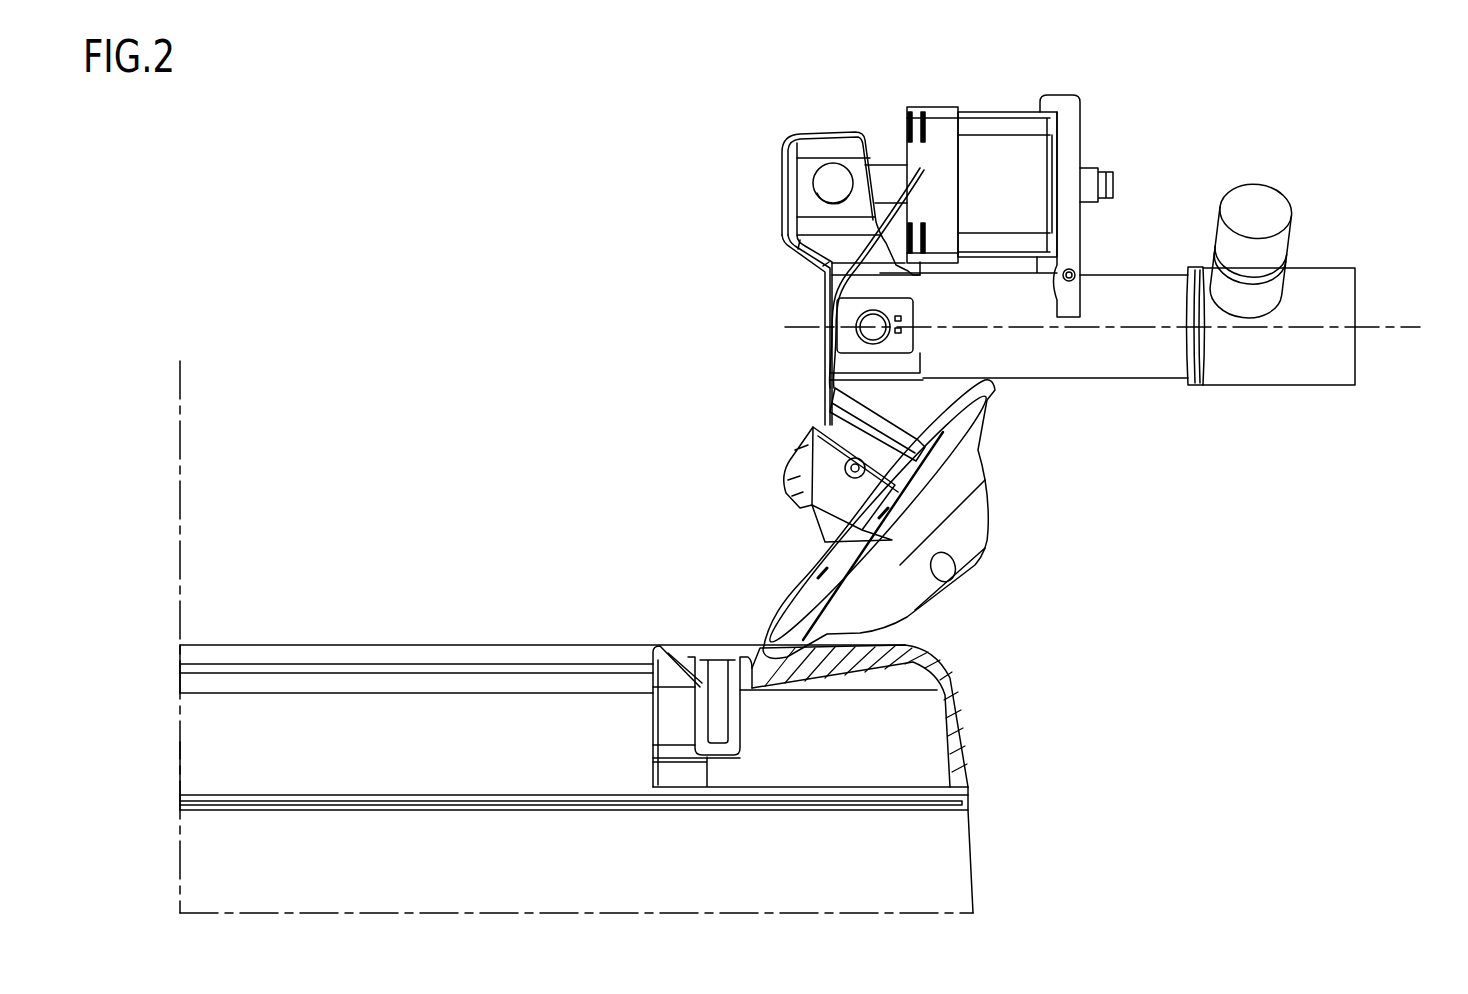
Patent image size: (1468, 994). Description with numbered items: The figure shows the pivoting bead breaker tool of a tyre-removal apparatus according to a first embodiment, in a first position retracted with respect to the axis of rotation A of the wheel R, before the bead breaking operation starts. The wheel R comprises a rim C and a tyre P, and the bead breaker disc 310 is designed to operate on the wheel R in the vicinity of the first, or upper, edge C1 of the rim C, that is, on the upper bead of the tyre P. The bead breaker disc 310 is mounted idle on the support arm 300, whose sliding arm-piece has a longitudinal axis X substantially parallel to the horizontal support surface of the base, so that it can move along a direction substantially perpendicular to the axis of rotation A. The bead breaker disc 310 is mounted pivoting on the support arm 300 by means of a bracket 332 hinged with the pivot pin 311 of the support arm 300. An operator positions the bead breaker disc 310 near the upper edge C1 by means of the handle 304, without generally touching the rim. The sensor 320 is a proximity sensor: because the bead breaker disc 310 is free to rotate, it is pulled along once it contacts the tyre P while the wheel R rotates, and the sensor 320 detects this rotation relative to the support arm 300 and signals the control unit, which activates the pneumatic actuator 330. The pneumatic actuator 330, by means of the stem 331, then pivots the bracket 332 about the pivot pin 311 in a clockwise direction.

The support arm 300 is at (1122, 291).
The handle 304 is at (1195, 177).
The bead breaker disc 310 is at (1024, 561).
The pivot pin 311 is at (911, 352).
The sensor 320 is at (824, 385).
The pneumatic actuator 330 is at (761, 117).
The stem 331 is at (864, 116).
The bracket 332 is at (767, 270).
The axis of rotation of the wheel A is at (180, 447).
The wheel R is at (146, 757).
The rim C is at (598, 648).
The first edge of the rim C1 is at (723, 618).
The tyre P is at (963, 695).
The longitudinal axis X is at (1393, 325).